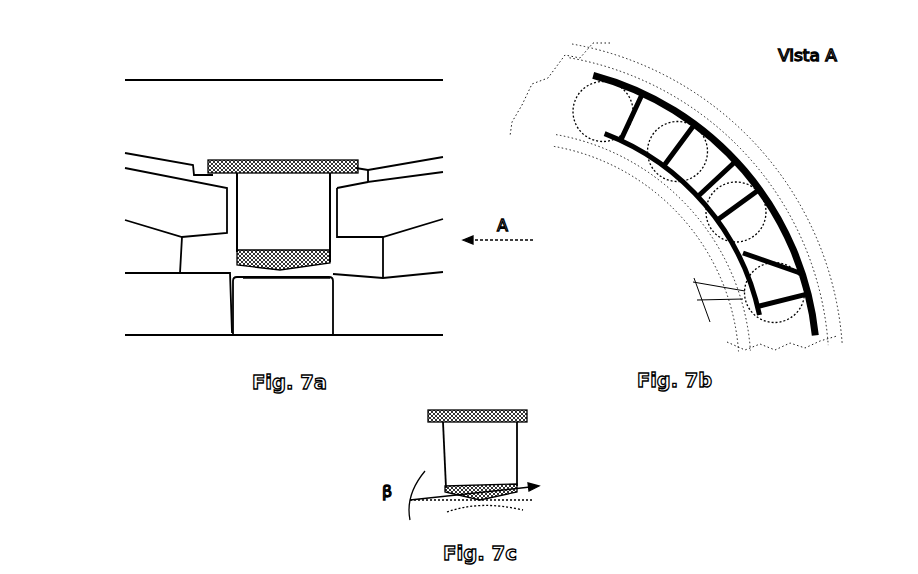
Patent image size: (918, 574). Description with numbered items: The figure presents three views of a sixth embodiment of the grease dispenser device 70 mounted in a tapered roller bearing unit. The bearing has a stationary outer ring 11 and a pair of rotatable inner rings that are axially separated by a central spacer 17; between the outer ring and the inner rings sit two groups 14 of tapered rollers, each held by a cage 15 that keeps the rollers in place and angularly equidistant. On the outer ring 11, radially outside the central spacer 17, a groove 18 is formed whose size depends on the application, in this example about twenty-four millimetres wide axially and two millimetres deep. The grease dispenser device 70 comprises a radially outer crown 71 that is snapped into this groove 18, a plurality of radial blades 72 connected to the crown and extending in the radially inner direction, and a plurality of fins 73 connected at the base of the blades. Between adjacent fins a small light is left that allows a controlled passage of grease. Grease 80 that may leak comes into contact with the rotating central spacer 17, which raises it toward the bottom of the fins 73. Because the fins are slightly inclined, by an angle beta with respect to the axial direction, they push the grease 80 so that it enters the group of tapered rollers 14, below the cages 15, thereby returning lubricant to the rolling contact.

In FIG. 7A, the outer ring 11 is at (208, 105).
In FIG. 7B, the outer ring 11 is at (677, 107).
In FIG. 7A, the group of tapered rollers 14 is at (120, 217).
In FIG. 7A, the cage 15 is at (375, 205).
In FIG. 7A, the spacer 17 is at (292, 302).
In FIG. 7B, the spacer 17 is at (668, 207).
In FIG. 7A, the groove 18 is at (278, 150).
In FIG. 7B, the grease dispenser device 70 is at (703, 170).
In FIG. 7A, the radially outer crown 71 is at (300, 163).
In FIG. 7B, the radially outer crown 71 is at (743, 160).
In FIG. 7A, the radial blades 72 is at (297, 217).
In FIG. 7B, the radial blades 72 is at (777, 213).
In FIG. 7A, the fins 73 is at (253, 267).
In FIG. 7B, the fins 73 is at (643, 133).
In FIG. 7C, the grease 80 is at (490, 482).